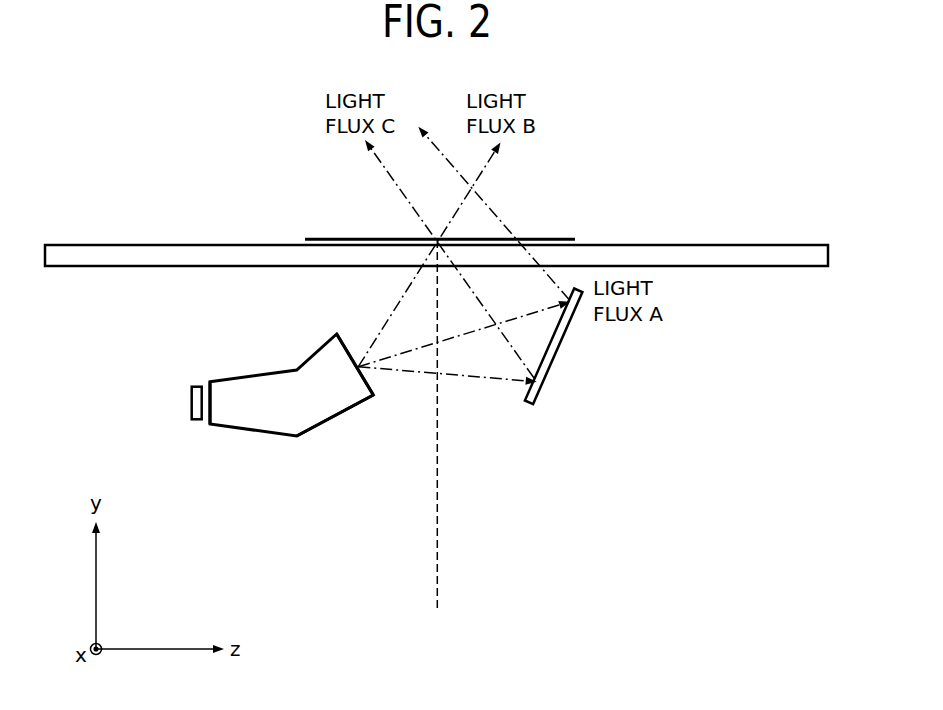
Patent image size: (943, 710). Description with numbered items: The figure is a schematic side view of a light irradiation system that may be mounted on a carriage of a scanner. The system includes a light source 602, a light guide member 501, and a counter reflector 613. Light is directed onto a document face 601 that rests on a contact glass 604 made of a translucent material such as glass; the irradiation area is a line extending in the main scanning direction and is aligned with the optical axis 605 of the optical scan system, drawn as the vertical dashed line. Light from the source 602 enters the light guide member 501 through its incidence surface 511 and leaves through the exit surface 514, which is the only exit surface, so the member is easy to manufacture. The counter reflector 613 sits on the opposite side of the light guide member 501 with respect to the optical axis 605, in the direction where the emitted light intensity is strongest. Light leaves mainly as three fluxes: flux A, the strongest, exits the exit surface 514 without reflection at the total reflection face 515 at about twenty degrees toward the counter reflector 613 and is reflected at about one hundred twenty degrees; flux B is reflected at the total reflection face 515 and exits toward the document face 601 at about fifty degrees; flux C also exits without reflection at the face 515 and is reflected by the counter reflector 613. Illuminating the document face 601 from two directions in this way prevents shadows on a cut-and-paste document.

The light guide member 501 is at (293, 406).
The incidence surface 511 is at (207, 381).
The exit surface 514 is at (373, 387).
The total reflection face 515 is at (343, 415).
The light source 602 is at (196, 420).
The document face 601 is at (350, 237).
The contact glass 604 is at (728, 243).
The counter reflector 613 is at (557, 352).
The optical axis of the optical scan system 605 is at (439, 558).